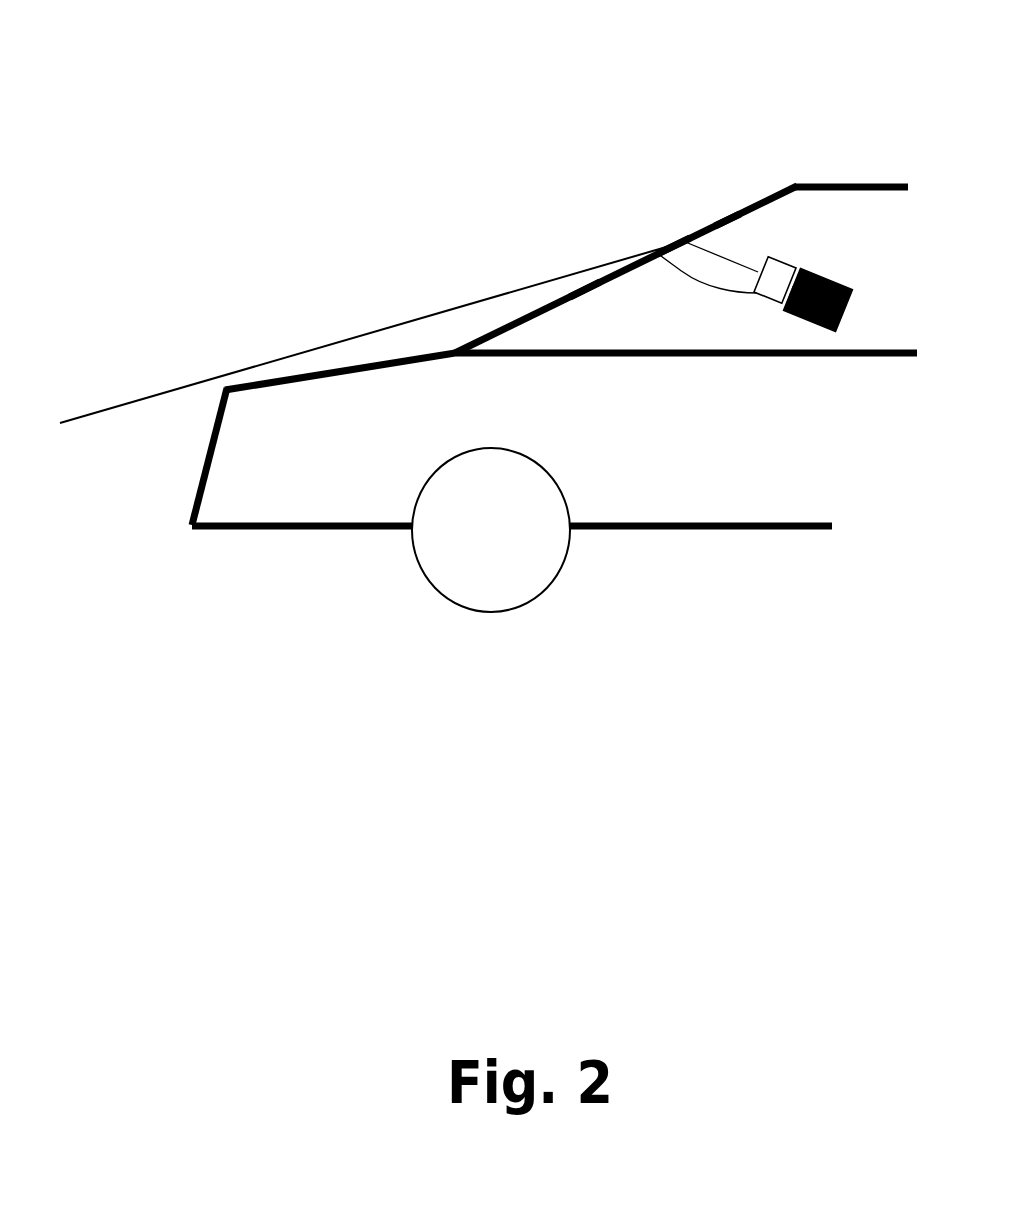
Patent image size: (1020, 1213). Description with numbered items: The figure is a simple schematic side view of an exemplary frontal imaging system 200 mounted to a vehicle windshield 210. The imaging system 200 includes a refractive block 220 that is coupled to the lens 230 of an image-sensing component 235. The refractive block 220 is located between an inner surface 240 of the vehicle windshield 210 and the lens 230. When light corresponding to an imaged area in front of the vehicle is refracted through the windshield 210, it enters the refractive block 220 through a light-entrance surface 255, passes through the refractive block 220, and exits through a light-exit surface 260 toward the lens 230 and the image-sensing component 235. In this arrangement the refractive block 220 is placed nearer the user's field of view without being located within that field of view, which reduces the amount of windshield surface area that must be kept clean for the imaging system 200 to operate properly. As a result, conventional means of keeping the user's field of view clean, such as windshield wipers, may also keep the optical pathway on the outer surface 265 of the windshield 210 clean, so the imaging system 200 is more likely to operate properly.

The frontal imaging system 200 is at (852, 310).
The vehicle windshield 210 is at (690, 236).
The refractive block 220 is at (715, 289).
The lens 230 is at (763, 301).
The image-sensing component 235 is at (828, 277).
The inner surface 240 is at (585, 300).
The light-entrance surface 255 is at (684, 256).
The light-exit surface 260 is at (757, 257).
The outer surface 265 is at (727, 210).